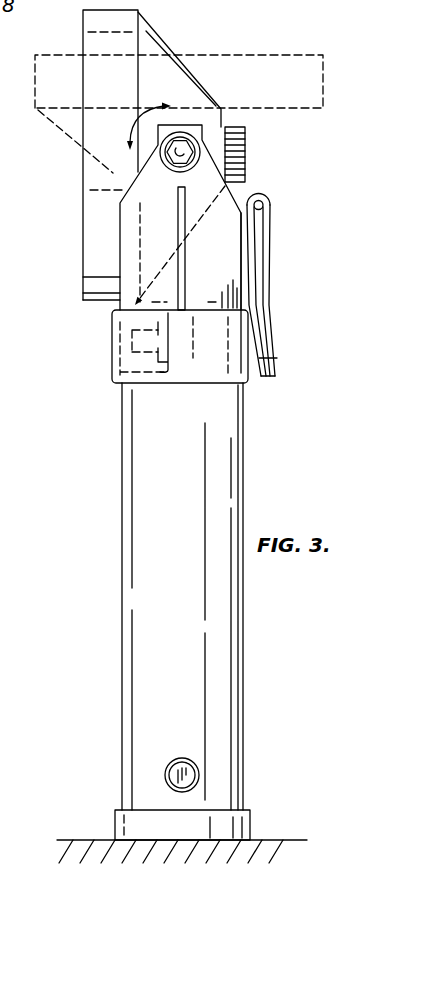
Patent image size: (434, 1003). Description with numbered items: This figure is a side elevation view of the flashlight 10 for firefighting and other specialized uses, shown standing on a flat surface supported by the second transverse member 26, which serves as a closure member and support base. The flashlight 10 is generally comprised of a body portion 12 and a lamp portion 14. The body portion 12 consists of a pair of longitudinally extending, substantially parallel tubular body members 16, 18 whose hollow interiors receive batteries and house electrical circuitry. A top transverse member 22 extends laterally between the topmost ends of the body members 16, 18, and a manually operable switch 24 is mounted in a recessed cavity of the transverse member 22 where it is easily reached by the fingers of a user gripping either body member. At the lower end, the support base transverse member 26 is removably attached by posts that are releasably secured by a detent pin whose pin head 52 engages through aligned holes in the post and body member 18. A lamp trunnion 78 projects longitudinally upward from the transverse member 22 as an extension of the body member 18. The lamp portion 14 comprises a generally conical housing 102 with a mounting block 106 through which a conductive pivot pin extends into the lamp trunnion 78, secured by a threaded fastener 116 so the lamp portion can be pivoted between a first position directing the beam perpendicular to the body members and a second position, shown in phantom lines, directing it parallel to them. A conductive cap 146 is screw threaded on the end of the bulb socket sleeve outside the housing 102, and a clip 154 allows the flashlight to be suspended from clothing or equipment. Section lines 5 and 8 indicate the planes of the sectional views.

The flashlight 10 is at (286, 200).
The body portion 12 is at (118, 449).
The lamp portion 14 is at (78, 219).
The body member 16 is at (185, 87).
The body member 18 is at (143, 552).
The top transverse member 22 is at (225, 372).
The manually operable switch 24 is at (132, 340).
The second transverse member 26 is at (115, 827).
The pin head 52 is at (167, 773).
The lamp trunnion 78 is at (232, 238).
The housing 102 is at (212, 95).
The mounting block 106 is at (221, 99).
The threaded fastener 116 is at (173, 173).
The conductive cap 146 is at (247, 147).
The clip 154 is at (265, 278).
The section line 5- 5 is at (182, 3).
The section line 8- 8 is at (182, 747).